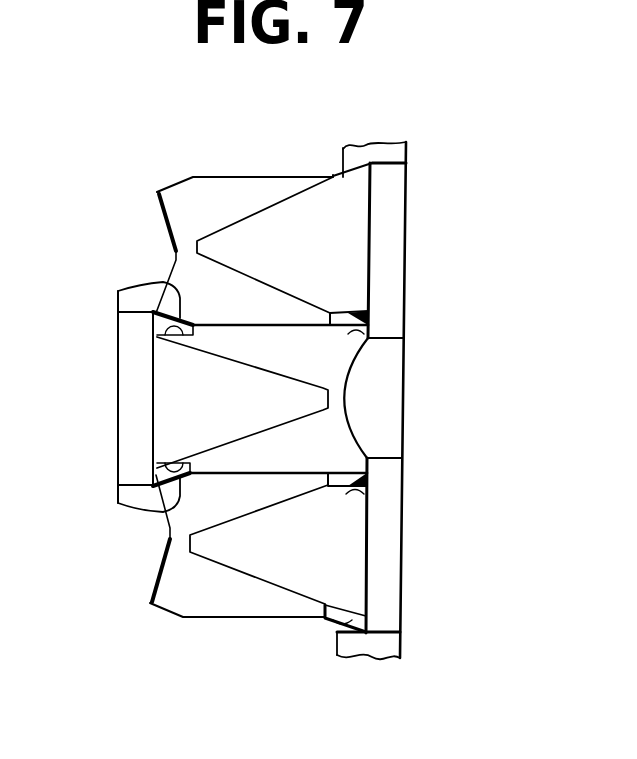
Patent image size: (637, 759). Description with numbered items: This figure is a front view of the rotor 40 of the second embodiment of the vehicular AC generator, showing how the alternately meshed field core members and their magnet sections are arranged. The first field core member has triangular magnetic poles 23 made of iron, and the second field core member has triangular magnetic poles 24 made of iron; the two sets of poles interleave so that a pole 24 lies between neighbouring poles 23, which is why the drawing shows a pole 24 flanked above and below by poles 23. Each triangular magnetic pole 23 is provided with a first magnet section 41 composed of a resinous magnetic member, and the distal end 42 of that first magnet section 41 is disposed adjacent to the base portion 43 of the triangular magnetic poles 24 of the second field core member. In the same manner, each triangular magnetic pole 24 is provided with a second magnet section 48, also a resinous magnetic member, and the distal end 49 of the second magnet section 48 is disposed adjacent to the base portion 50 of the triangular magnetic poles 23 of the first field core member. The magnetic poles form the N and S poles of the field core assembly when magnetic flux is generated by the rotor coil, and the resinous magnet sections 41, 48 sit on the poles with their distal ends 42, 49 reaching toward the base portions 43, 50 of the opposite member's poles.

The rotor 40 is at (418, 318).
The first magnet section 41 is at (236, 200).
The triangular magnetic pole 23 is at (333, 217).
The triangular magnetic pole 24 is at (183, 428).
The distal end 42 is at (168, 281).
The base portion 43 is at (166, 328).
The second magnet section 48 is at (323, 440).
The distal end 49 is at (368, 338).
The base portion 50 is at (370, 310).